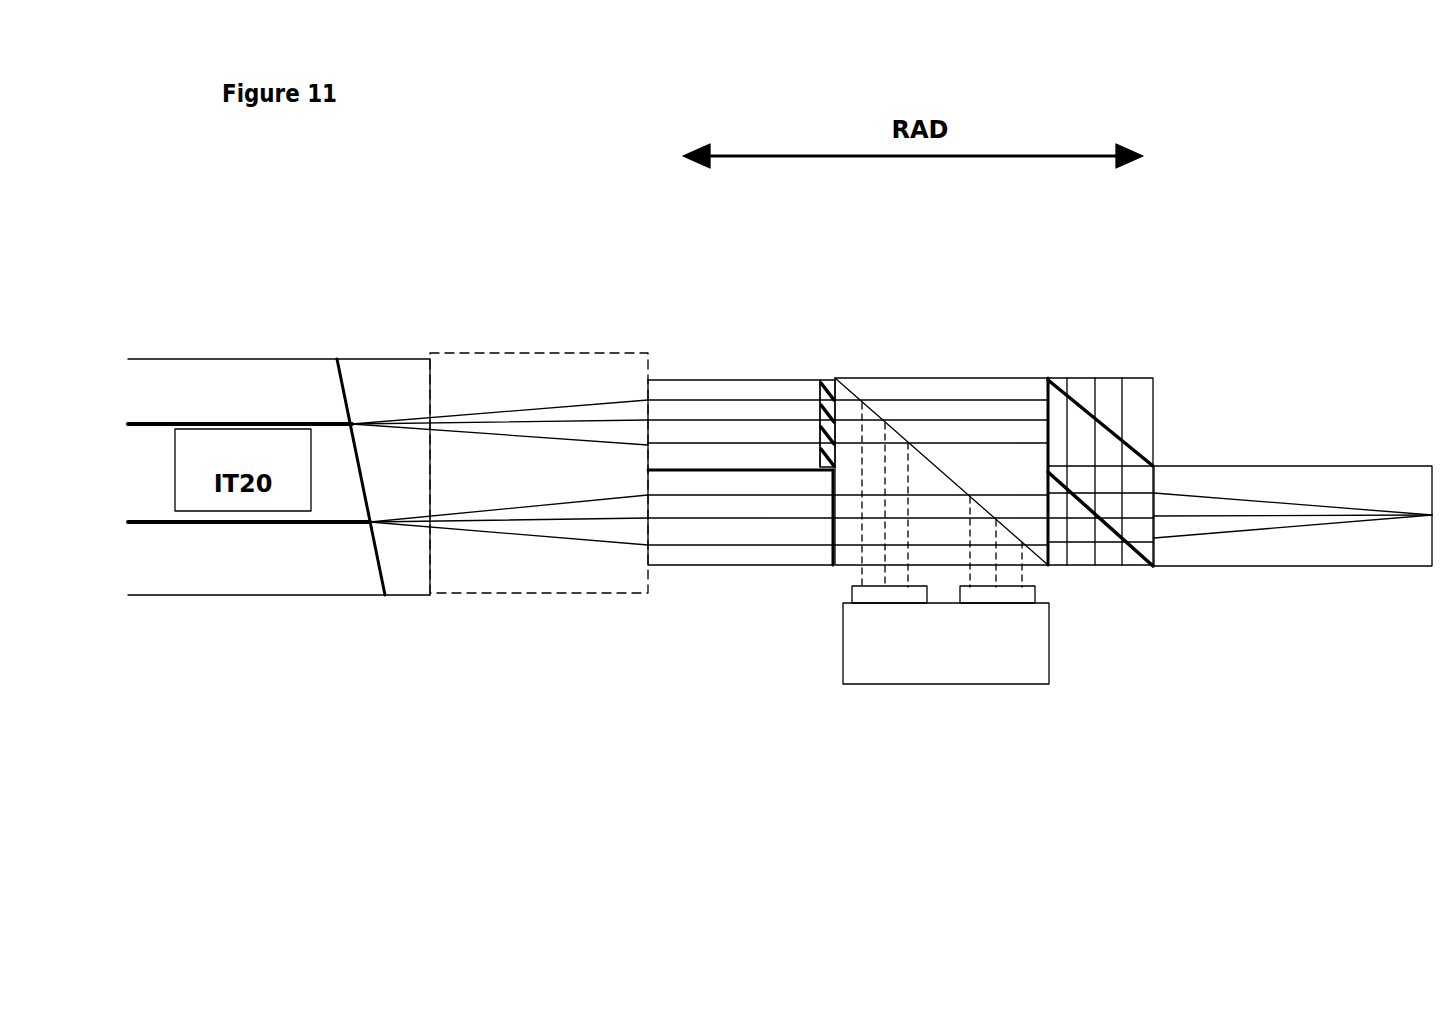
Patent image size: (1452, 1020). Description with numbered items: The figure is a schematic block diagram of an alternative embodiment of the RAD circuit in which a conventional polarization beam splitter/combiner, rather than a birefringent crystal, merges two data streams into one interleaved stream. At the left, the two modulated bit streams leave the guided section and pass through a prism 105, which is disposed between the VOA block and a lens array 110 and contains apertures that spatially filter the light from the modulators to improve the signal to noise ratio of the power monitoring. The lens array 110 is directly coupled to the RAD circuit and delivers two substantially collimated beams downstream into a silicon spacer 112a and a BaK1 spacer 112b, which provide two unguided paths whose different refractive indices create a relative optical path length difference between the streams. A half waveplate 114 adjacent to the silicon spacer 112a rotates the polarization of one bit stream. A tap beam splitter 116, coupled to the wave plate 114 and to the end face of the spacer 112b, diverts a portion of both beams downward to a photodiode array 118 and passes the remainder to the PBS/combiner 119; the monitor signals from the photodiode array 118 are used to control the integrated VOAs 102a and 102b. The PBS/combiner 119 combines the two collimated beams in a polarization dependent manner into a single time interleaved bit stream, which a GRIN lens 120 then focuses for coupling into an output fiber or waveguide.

The integrated VOA 102a is at (150, 424).
The integrated VOA 102b is at (190, 524).
The prism 105 is at (373, 375).
The lens array 110 is at (517, 354).
The silicon spacer 112a is at (718, 381).
The BaK1 spacer 112b is at (729, 556).
The half waveplate 114 is at (826, 381).
The tap beam splitter 116 is at (970, 387).
The photodiode array 118 is at (1017, 641).
The polarization beam splitter/combiner 119 is at (1098, 386).
The GRIN lens 120 is at (1338, 555).